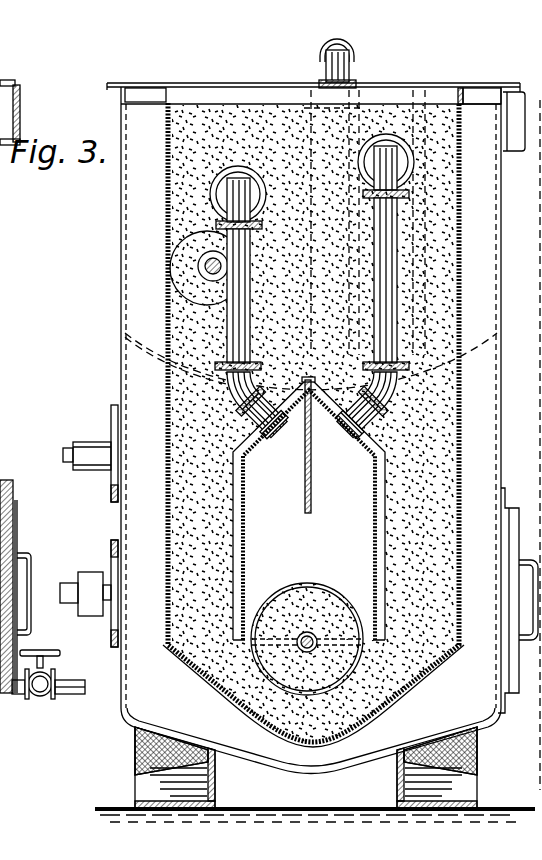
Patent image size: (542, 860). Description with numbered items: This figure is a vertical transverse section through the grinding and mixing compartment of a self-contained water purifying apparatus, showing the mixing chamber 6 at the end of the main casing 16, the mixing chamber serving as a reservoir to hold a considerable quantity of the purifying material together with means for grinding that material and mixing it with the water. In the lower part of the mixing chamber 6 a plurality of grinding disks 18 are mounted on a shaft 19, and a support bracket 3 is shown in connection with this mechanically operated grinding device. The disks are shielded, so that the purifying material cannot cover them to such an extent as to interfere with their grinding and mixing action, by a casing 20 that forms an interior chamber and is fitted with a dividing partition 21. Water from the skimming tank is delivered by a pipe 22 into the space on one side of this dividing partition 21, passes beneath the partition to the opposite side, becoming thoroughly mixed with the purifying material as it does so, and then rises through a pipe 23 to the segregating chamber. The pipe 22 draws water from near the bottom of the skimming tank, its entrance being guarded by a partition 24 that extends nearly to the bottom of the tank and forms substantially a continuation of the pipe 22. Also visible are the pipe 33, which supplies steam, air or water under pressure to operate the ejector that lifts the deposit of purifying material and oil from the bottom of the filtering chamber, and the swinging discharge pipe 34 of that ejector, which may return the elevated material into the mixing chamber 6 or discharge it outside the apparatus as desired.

The support bracket 3 is at (20, 107).
The mixing chamber 6 is at (313, 425).
The main casing 16 is at (0, 262).
The grinding disks 18 is at (307, 639).
The shaft 19 is at (365, 645).
The casing 20 is at (380, 498).
The dividing partition 21 is at (304, 488).
The pipe 22 is at (385, 287).
The pipe 23 is at (240, 327).
The partition 24 is at (336, 165).
The pipe 33 is at (77, 694).
The discharge pipe 34 is at (357, 73).